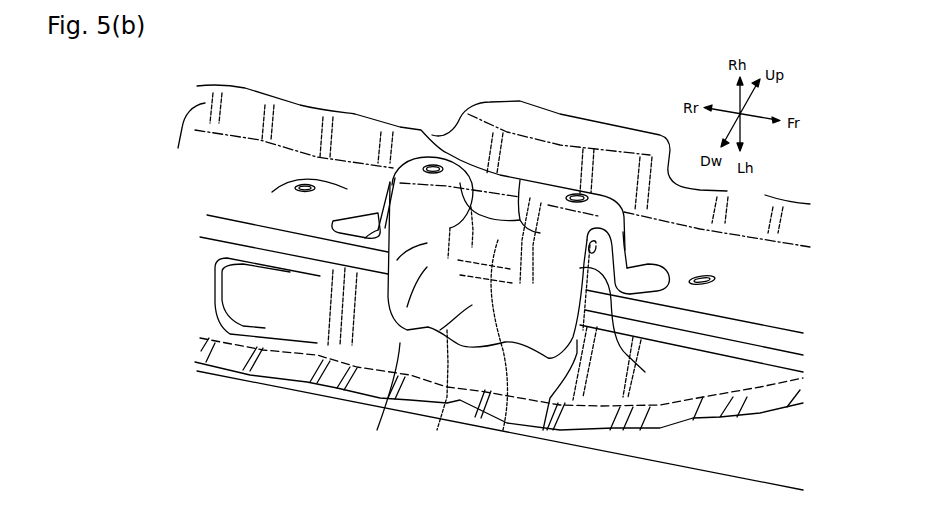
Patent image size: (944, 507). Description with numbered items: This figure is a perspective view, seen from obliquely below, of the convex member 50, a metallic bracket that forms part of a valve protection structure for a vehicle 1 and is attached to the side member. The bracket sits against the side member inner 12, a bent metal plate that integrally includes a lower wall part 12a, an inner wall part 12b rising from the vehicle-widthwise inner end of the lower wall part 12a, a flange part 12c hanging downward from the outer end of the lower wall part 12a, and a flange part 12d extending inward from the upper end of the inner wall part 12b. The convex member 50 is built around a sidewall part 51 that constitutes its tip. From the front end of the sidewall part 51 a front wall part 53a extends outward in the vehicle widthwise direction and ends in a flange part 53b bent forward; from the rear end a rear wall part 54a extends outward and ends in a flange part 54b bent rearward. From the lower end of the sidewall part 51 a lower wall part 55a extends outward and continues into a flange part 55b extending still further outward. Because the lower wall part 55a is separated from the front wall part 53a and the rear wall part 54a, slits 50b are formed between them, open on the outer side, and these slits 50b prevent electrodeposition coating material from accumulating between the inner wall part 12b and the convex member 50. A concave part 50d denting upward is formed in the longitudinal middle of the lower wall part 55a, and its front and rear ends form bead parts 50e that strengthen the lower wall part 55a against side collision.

The vehicle 1 is at (447, 115).
The side member inner 12 is at (150, 150).
The lower wall part 12a is at (207, 290).
The inner wall part 12b is at (222, 186).
The flange part 12c is at (204, 337).
The flange part 12d is at (480, 149).
The convex member 50 is at (543, 100).
The slit 50b is at (365, 238).
The concave part 50d is at (505, 400).
The bead part 50e is at (447, 158).
The sidewall part 51 is at (520, 180).
The front wall part 53a is at (390, 205).
The flange part 53b is at (363, 221).
The rear wall part 54a is at (623, 250).
The flange part 54b is at (643, 272).
The lower wall part 55a is at (388, 385).
The flange part 55b is at (452, 395).